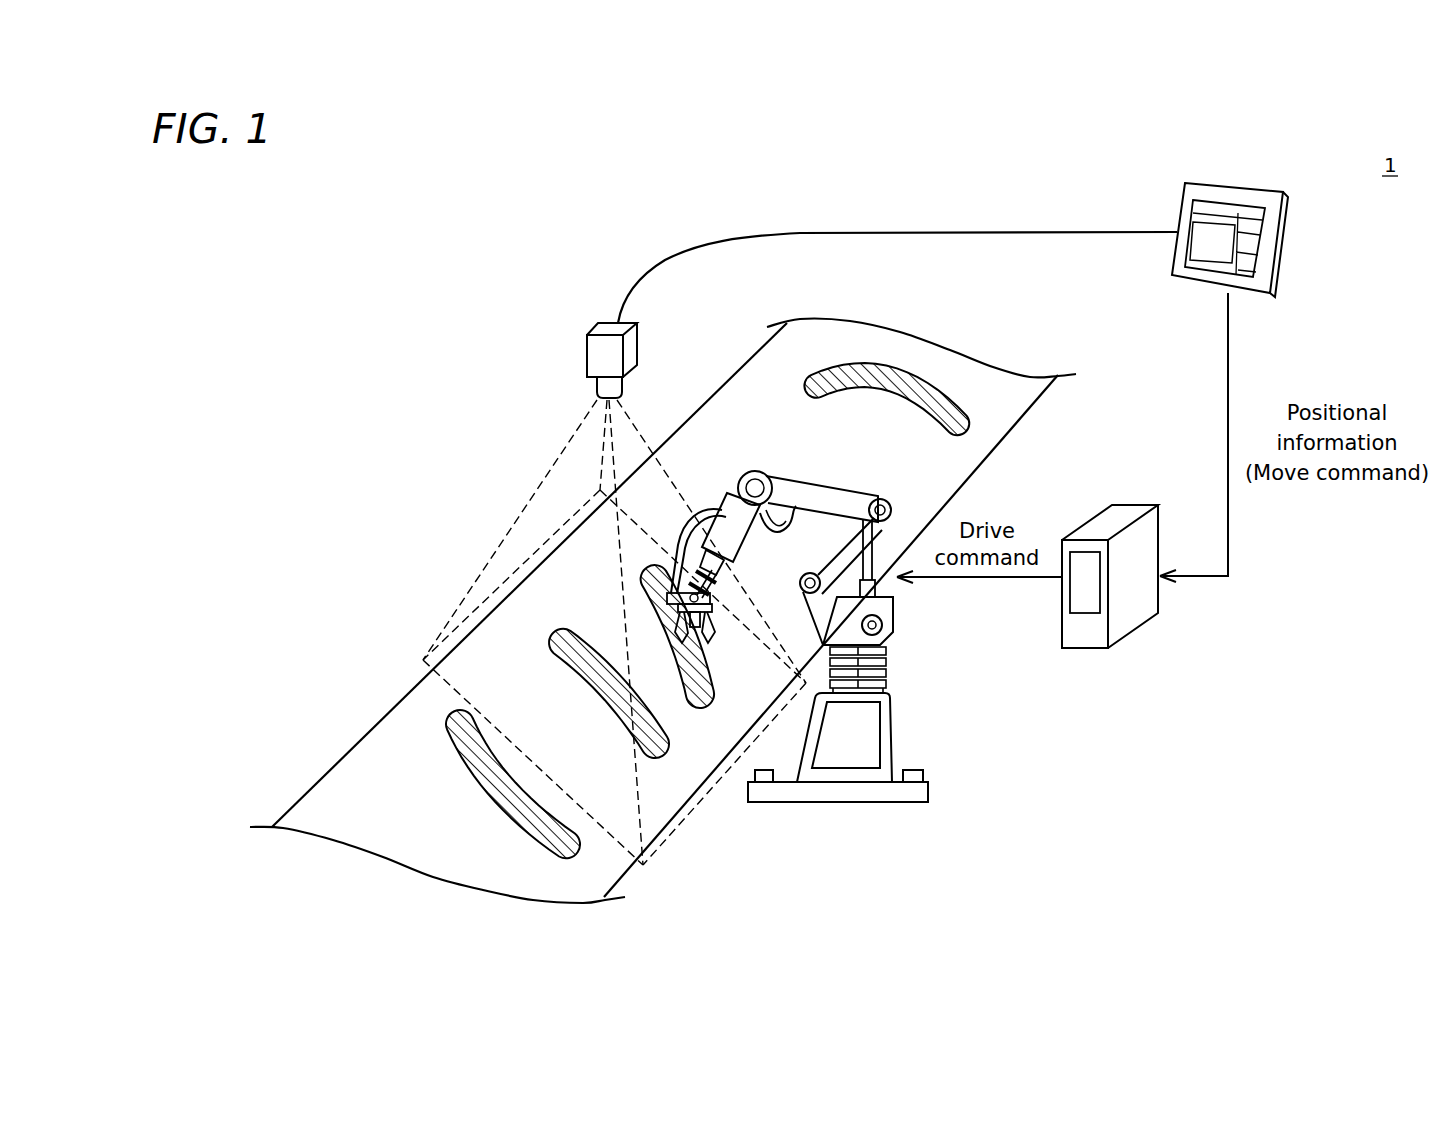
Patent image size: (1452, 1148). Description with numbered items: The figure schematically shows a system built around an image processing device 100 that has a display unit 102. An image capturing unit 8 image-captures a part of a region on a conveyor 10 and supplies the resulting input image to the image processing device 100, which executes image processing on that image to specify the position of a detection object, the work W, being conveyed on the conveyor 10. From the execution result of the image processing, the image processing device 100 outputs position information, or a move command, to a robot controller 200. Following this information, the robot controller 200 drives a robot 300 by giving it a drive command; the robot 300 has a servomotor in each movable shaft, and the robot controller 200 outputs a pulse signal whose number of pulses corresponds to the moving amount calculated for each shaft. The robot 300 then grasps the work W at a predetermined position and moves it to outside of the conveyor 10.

The image capturing unit 8 is at (587, 352).
The conveyor 10 is at (1016, 398).
The image processing device 100 is at (1262, 187).
The display unit 102 is at (1235, 242).
The robot controller 200 is at (1122, 513).
The robot 300 is at (910, 702).
The work W is at (712, 657).